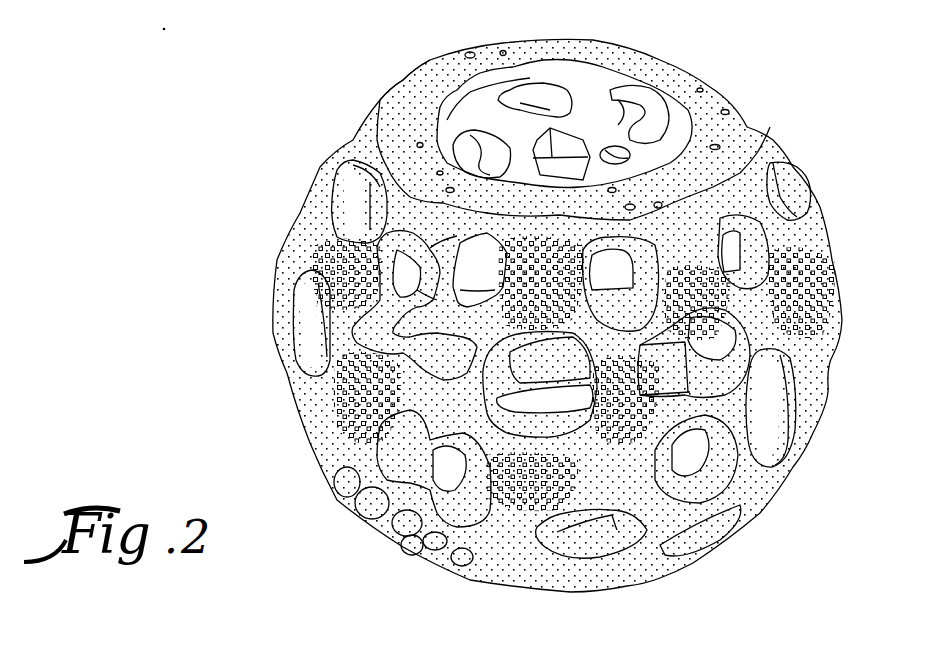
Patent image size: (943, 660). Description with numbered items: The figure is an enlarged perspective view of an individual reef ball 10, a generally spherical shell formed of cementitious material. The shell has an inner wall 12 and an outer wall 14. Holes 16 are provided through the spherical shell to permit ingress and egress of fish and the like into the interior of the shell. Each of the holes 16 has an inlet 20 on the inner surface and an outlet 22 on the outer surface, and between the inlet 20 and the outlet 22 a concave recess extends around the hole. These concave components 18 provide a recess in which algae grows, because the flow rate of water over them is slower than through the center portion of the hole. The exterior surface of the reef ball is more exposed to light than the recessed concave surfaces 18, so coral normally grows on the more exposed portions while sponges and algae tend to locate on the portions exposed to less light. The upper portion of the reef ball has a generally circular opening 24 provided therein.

The reef ball 10 is at (682, 64).
The inner wall 12 is at (536, 68).
The outer wall 14 is at (398, 90).
The holes 16 is at (347, 160).
The concave components 18 is at (297, 283).
The inlet 20 is at (540, 114).
The outlet 22 is at (294, 323).
The circular opening 24 is at (644, 161).